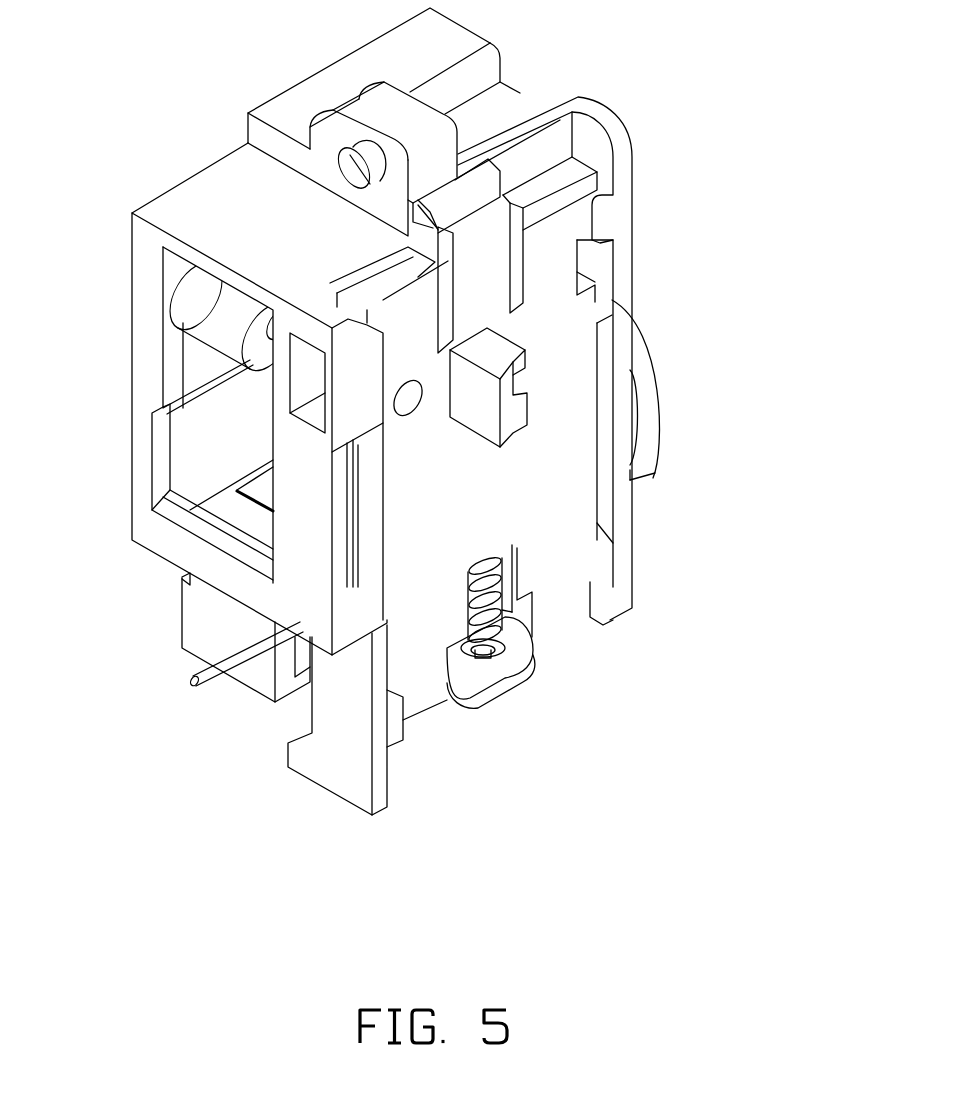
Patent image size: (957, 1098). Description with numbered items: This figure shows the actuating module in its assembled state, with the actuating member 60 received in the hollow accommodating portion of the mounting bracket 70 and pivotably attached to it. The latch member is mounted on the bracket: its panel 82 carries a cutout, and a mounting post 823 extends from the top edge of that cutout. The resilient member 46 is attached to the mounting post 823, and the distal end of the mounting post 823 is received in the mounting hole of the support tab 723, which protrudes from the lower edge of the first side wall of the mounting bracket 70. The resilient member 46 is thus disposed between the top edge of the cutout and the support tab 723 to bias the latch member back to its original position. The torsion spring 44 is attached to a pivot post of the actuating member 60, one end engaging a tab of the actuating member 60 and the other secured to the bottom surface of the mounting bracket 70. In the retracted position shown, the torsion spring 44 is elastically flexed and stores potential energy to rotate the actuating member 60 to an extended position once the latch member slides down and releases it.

The torsion spring 44 is at (207, 677).
The resilient member 46 is at (500, 630).
The actuating member 60 is at (213, 305).
The mounting bracket 70 is at (507, 112).
The panel 82 is at (570, 330).
The support tab 723 is at (463, 690).
The mounting post 823 is at (478, 638).